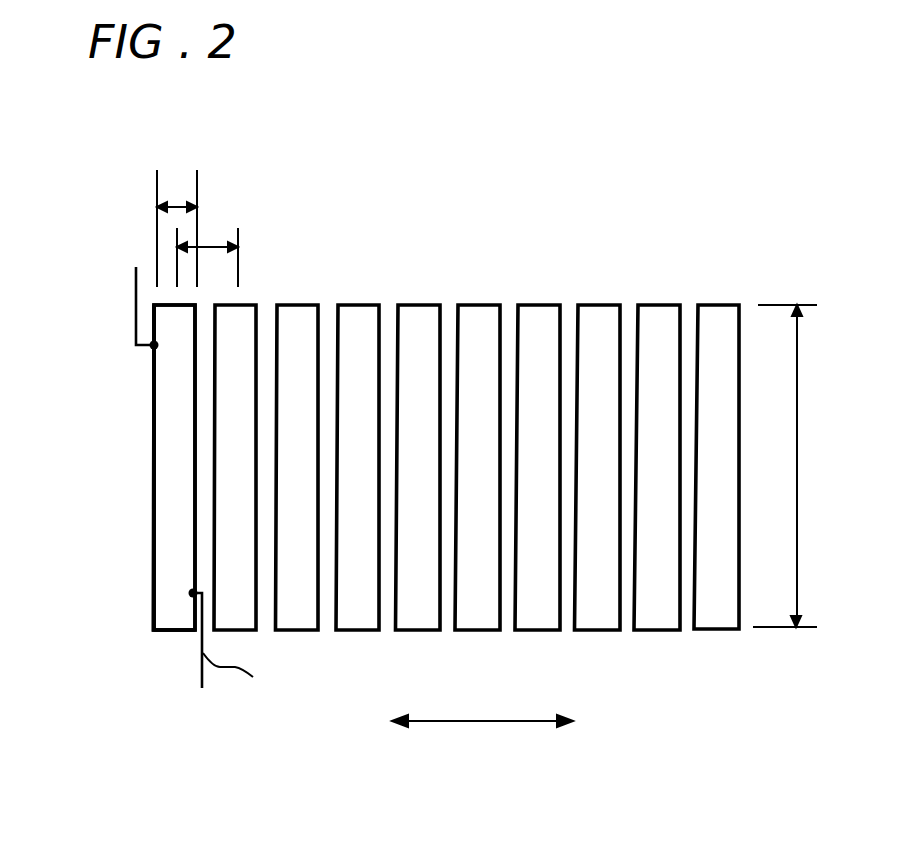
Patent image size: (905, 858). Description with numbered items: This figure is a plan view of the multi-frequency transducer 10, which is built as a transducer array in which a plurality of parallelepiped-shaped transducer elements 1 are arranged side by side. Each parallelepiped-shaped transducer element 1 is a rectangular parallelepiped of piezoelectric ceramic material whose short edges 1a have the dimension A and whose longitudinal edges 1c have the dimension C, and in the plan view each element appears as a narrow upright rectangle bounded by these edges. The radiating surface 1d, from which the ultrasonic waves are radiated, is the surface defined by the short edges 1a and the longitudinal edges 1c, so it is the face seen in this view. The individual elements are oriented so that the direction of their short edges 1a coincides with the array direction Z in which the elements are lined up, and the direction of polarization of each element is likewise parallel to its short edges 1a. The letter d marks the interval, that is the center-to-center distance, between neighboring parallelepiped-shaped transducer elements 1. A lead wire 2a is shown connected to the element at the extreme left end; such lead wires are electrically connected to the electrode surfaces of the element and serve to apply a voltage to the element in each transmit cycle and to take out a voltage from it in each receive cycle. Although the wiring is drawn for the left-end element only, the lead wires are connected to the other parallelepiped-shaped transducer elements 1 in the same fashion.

The multi-frequency transducer 10 is at (502, 225).
The parallelepiped-shaped transducer element 1 is at (153, 462).
The short edges 1a is at (173, 633).
The longitudinal edges 1c is at (153, 537).
The radiating surface 1d is at (175, 403).
The lead wire 2a is at (135, 305).
The dimension of short edges A is at (177, 228).
The interval between transducer elements d is at (207, 257).
The dimension of longitudinal edges C is at (786, 466).
The array direction Z is at (482, 733).